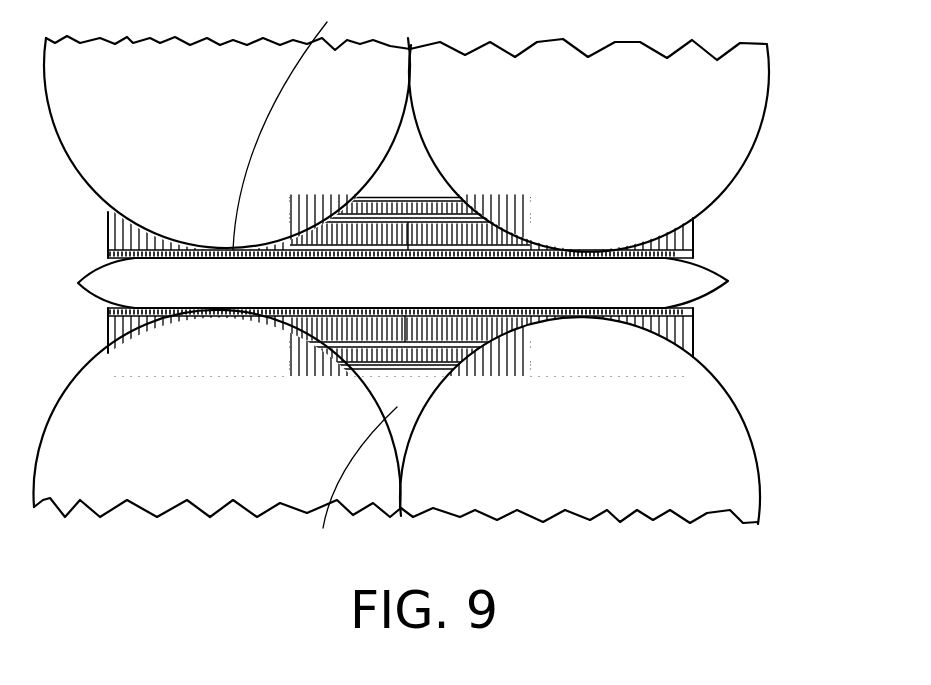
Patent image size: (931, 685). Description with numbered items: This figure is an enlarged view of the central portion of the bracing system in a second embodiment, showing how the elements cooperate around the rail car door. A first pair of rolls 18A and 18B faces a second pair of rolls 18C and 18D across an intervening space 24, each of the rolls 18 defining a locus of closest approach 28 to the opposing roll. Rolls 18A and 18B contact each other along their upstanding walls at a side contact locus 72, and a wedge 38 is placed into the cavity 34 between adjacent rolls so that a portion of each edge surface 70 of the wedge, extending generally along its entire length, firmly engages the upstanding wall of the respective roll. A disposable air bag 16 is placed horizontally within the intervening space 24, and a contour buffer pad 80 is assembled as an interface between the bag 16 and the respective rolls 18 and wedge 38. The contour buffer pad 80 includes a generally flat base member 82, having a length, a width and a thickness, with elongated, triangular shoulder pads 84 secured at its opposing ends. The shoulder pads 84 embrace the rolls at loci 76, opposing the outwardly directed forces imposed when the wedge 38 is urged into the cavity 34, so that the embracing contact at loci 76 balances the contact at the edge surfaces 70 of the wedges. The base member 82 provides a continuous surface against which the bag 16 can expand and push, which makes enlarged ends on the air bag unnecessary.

The disposable air bag 16 is at (437, 244).
The rolls 18 is at (430, 280).
The roll 18A is at (157, 464).
The roll 18B is at (668, 465).
The roll 18C is at (182, 115).
The roll 18D is at (553, 115).
The intervening space 24 is at (543, 277).
The locus of closest approach 28 is at (300, 127).
The cavity 34 is at (352, 485).
The wedge 38 is at (434, 192).
The edge surface 70 is at (308, 333).
The side contact locus 72 is at (400, 497).
The loci 76 is at (673, 230).
The contour buffer pad 80 is at (400, 221).
The base member 82 is at (354, 260).
The shoulder pads 84 is at (438, 265).